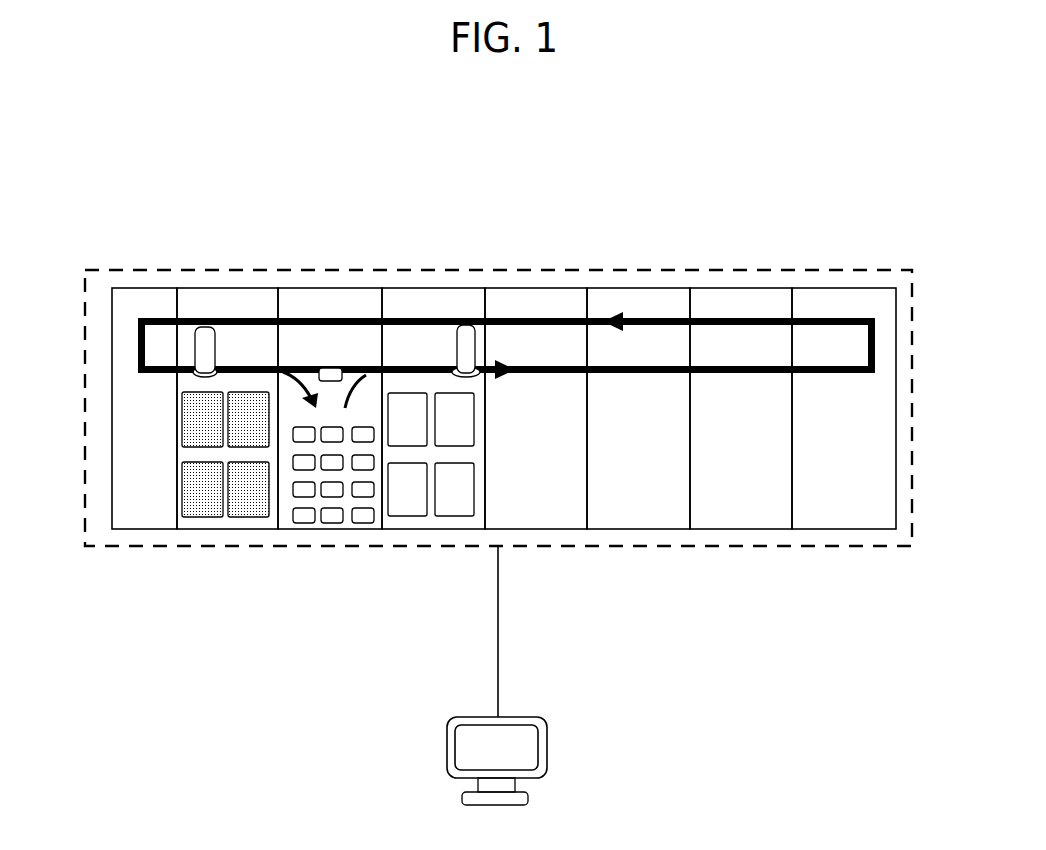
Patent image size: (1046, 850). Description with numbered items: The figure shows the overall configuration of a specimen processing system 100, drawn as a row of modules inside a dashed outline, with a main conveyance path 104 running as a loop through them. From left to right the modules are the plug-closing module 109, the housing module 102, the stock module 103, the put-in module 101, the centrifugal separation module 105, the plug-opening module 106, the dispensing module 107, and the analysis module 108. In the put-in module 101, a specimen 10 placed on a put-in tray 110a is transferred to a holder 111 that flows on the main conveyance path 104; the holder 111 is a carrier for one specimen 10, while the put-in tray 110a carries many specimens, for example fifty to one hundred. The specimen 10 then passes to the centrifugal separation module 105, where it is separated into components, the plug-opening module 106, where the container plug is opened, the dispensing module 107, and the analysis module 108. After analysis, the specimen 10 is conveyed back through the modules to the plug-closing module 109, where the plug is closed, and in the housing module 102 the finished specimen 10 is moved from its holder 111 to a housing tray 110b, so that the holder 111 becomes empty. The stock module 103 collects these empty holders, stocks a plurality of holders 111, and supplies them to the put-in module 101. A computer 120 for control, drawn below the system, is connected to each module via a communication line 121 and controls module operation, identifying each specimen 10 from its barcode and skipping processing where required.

The specimen processing system 100 is at (833, 547).
The put-in module 101 is at (432, 298).
The housing module 102 is at (224, 298).
The stock module 103 is at (327, 298).
The main conveyance path 104 is at (552, 382).
The centrifugal separation module 105 is at (535, 298).
The plug-opening module 106 is at (630, 298).
The dispensing module 107 is at (746, 298).
The analysis module 108 is at (835, 298).
The plug-closing module 109 is at (147, 298).
The specimen 10 is at (203, 343).
The holder 111 is at (217, 372).
The put-in tray 110a is at (412, 500).
The housing tray 110b is at (252, 502).
The computer for control 120 is at (547, 740).
The communication line 121 is at (498, 640).